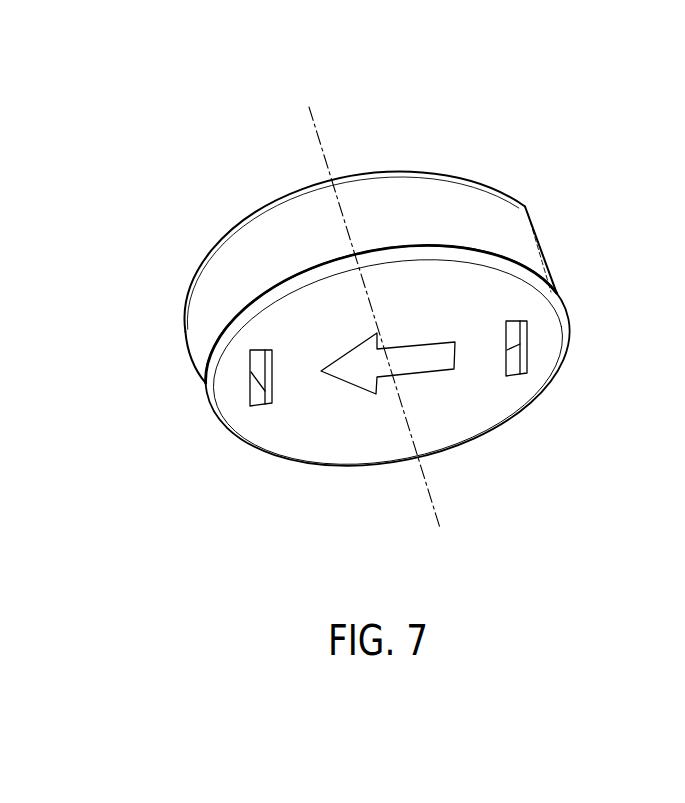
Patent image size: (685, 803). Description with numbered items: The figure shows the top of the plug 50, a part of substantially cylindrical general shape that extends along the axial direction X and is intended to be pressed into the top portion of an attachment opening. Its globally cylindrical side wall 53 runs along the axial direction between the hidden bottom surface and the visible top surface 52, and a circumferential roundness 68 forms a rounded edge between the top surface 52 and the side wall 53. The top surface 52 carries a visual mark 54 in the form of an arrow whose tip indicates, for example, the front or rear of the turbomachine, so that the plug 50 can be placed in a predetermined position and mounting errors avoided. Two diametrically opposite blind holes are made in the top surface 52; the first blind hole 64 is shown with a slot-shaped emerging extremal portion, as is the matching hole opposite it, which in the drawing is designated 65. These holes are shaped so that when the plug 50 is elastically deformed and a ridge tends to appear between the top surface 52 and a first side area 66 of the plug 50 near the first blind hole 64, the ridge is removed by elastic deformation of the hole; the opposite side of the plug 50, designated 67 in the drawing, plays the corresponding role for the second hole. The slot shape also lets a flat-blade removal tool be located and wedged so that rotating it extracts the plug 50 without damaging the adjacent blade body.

The plug 50 is at (375, 286).
The top surface 52 is at (388, 325).
The side wall 53 is at (375, 269).
The visual mark 54 is at (418, 363).
The first blind hole 64 is at (264, 388).
The right slot 65 is at (515, 362).
The first side area 66 is at (192, 362).
The right edge of side wall 67 is at (555, 265).
The circumferential roundness 68 is at (467, 253).